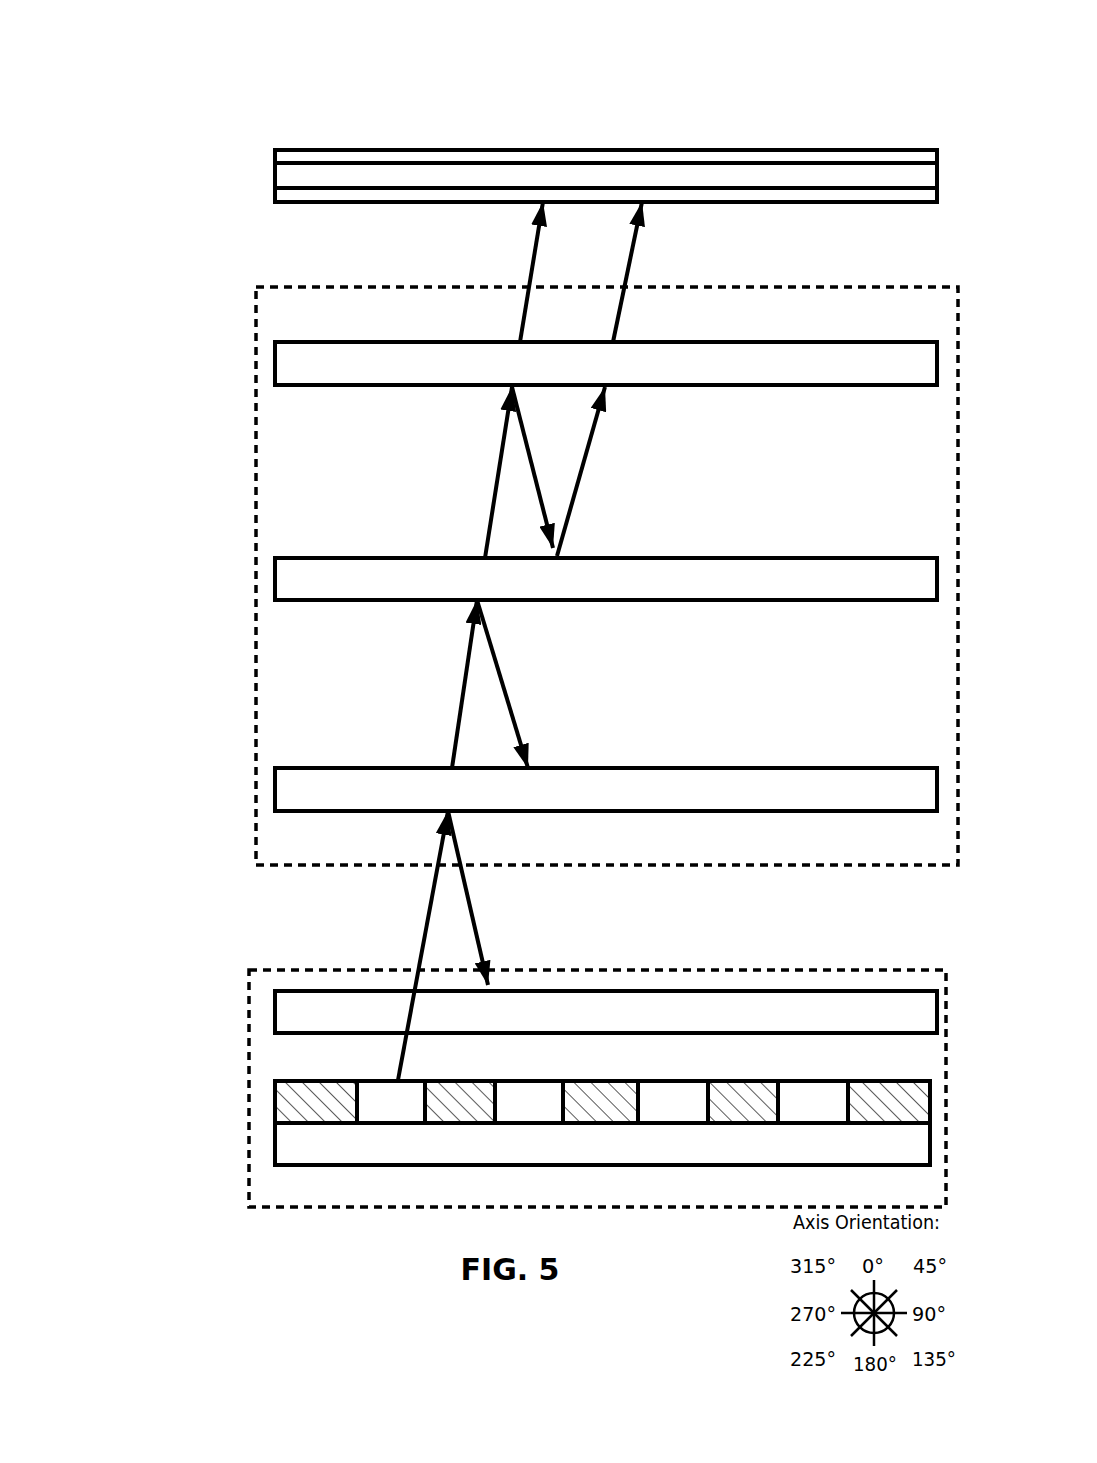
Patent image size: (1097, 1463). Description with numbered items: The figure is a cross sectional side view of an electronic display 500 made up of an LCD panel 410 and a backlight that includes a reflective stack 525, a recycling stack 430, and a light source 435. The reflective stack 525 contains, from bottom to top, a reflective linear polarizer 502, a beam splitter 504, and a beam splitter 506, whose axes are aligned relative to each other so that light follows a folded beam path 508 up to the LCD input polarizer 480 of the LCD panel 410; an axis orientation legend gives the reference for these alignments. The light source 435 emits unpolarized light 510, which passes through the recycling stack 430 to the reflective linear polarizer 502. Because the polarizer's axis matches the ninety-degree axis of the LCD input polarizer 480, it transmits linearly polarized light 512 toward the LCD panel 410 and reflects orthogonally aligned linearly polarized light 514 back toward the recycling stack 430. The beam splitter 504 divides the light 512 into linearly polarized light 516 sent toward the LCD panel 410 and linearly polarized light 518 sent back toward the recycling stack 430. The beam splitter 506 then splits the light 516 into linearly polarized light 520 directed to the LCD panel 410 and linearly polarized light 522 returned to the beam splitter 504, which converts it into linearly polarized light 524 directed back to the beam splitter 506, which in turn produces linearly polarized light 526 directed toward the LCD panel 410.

The electronic display 500 is at (501, 645).
The LCD panel 410 is at (520, 133).
The LCD input polarizer 480 is at (508, 211).
The folded beam path 508 is at (440, 125).
The reflective stack 525 is at (501, 576).
The beam splitter 506 is at (502, 341).
The beam splitter 504 is at (496, 566).
The reflective linear polarizer 502 is at (491, 740).
The unpolarized light 510 is at (365, 945).
The linearly polarized light 512 is at (395, 684).
The linearly polarized light 514 is at (535, 898).
The linearly polarized light 516 is at (431, 472).
The linearly polarized light 518 is at (573, 684).
The linearly polarized light 520 is at (418, 272).
The linearly polarized light 522 is at (630, 467).
The linearly polarized light 524 is at (727, 471).
The linearly polarized light 526 is at (735, 272).
The recycling stack 430 is at (521, 1129).
The light source 435 is at (524, 1185).